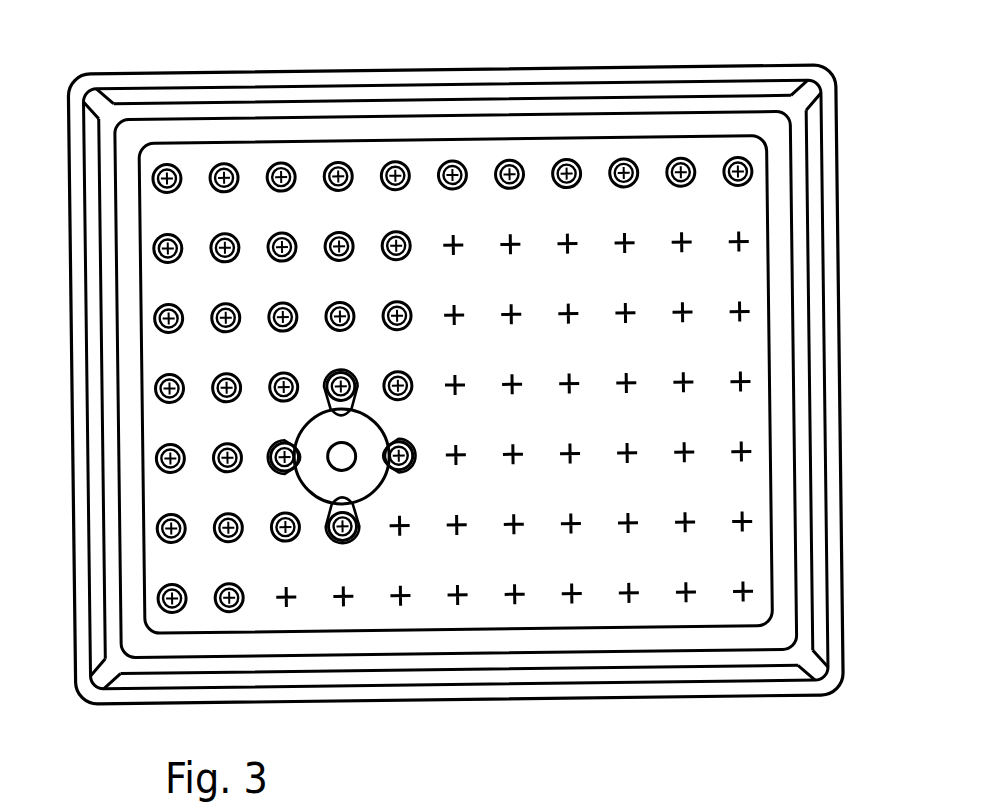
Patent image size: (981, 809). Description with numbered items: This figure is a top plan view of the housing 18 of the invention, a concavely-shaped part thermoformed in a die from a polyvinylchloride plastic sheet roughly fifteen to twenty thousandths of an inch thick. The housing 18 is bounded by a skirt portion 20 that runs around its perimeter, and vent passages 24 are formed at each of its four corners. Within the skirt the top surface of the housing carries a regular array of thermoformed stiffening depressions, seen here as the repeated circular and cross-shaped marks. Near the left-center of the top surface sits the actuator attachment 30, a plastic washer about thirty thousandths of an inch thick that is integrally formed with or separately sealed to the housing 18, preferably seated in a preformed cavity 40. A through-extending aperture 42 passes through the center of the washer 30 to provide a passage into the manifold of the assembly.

The housing 18 is at (844, 268).
The skirt portion 20 is at (842, 603).
The vent passages 24 is at (816, 666).
The actuator attachment 30 is at (298, 424).
The preformed cavity 40 is at (391, 436).
The through-extending aperture 42 is at (346, 443).